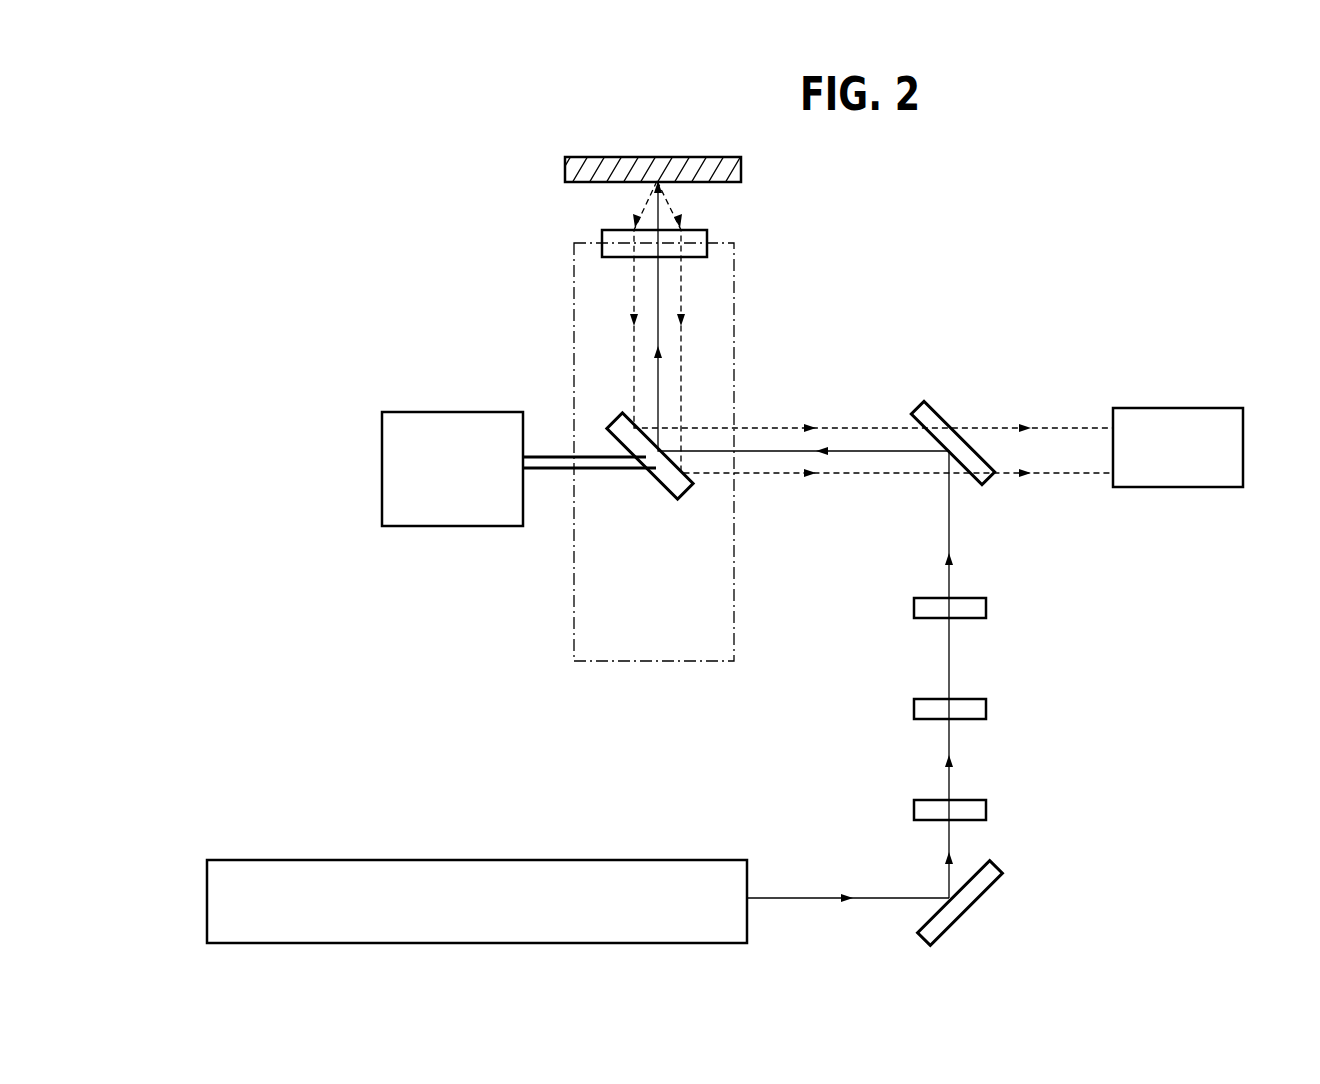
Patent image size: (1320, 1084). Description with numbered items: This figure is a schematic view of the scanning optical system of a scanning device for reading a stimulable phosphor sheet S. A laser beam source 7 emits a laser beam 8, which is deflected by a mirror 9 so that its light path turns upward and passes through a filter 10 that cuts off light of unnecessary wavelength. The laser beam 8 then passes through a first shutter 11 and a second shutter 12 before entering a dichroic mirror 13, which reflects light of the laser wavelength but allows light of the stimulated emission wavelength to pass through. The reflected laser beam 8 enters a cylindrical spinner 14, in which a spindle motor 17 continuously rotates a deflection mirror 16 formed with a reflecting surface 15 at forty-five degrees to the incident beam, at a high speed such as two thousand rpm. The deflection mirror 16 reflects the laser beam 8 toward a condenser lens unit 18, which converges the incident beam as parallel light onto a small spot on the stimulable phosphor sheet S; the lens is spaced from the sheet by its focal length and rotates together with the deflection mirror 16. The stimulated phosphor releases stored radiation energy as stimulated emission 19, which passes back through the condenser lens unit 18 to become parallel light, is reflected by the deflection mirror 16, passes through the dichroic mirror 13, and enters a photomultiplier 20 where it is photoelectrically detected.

The stimulable phosphor sheet S is at (736, 172).
The laser beam source 7 is at (538, 858).
The laser beam 8 is at (815, 896).
The mirror 9 is at (978, 880).
The filter 10 is at (988, 811).
The first shutter 11 is at (988, 710).
The second shutter 12 is at (988, 608).
The dichroic mirror 13 is at (928, 416).
The spinner 14 is at (568, 635).
The reflecting surface 15 is at (672, 458).
The deflection mirror 16 is at (674, 482).
The spindle motor 17 is at (422, 510).
The condenser lens unit 18 is at (616, 241).
The stimulated emission 19 is at (672, 213).
The photomultiplier 20 is at (1218, 474).